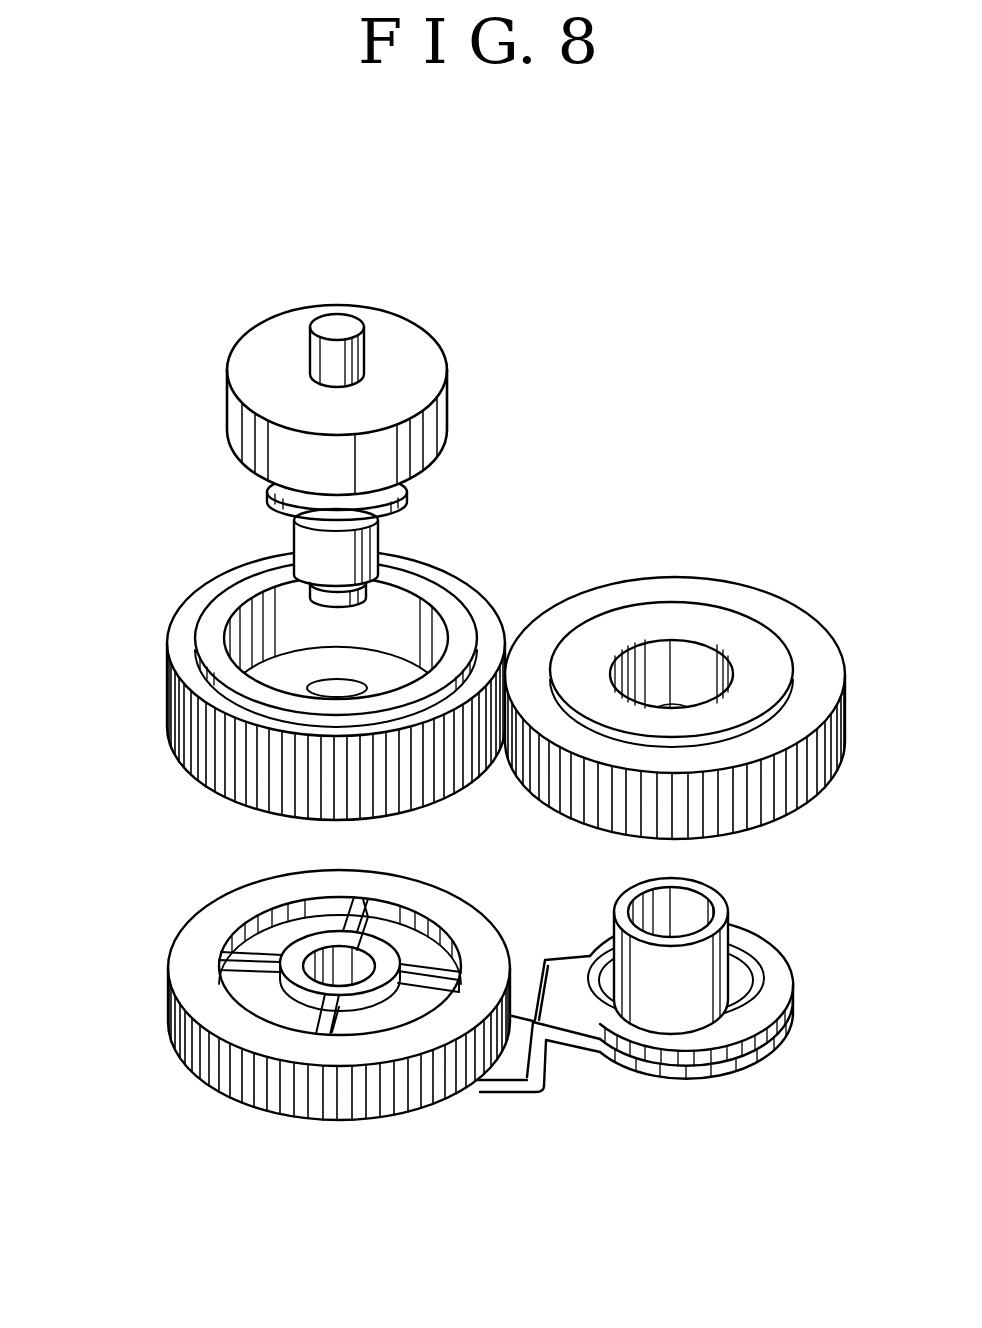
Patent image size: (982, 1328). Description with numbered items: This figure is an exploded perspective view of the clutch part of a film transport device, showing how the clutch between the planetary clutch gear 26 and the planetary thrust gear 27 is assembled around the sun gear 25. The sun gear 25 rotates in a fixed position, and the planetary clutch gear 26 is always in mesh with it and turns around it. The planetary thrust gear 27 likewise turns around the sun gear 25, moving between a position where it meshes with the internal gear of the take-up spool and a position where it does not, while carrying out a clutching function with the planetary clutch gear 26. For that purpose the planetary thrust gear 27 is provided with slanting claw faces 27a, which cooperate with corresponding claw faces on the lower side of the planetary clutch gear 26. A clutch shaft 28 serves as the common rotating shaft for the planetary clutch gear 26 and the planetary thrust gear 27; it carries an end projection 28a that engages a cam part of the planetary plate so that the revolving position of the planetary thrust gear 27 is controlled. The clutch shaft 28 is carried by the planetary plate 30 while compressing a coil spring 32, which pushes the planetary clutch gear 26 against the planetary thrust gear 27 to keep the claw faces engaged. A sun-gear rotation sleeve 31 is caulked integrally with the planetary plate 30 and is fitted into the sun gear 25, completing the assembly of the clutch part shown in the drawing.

The sun gear 25 is at (768, 602).
The planetary clutch gear 26 is at (483, 608).
The planetary thrust gear 27 is at (297, 1044).
The slanting claw faces 27a is at (243, 993).
The clutch shaft 28 is at (378, 401).
The end projection 28a is at (345, 322).
The planetary plate 30 is at (656, 1029).
The sun-gear rotation sleeve 31 is at (735, 955).
The coil spring 32 is at (405, 497).